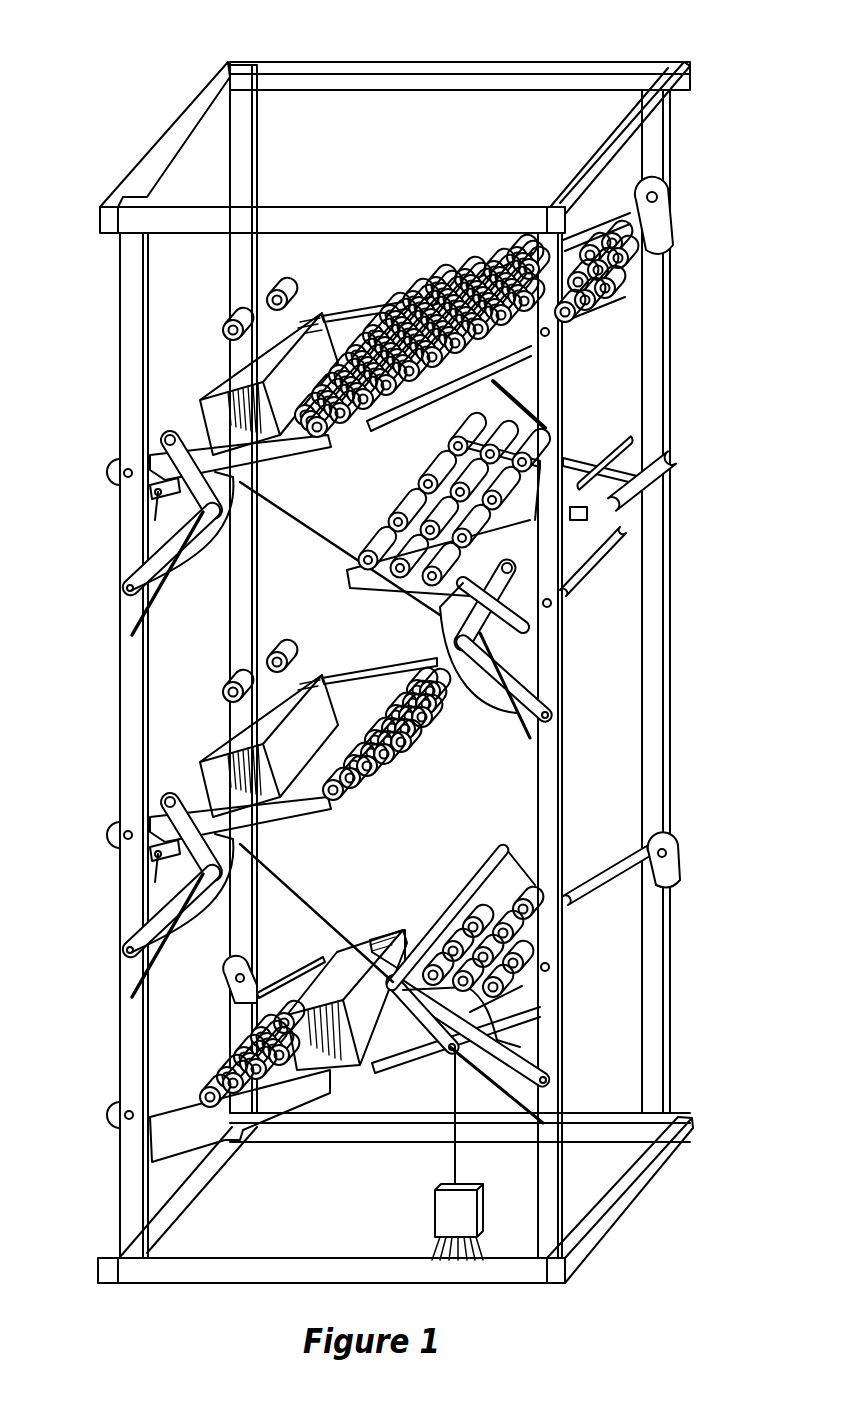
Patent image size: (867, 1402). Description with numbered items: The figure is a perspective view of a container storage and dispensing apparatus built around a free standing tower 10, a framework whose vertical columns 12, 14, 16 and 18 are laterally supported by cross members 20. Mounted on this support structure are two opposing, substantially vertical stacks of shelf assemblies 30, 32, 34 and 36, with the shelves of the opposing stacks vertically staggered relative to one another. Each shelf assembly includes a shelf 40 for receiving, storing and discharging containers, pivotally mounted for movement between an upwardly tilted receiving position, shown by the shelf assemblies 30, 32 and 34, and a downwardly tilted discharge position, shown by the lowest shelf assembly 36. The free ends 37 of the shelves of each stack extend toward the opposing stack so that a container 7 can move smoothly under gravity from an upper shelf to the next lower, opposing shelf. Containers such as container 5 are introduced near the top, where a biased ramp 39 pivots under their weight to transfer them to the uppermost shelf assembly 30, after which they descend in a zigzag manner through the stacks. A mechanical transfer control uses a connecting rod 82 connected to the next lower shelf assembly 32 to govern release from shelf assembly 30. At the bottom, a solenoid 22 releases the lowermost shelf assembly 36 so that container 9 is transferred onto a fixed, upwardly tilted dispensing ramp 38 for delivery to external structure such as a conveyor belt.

The free standing tower 10 is at (505, 51).
The vertical column 12 is at (668, 345).
The vertical column 14 is at (480, 405).
The vertical column 16 is at (118, 366).
The vertical column 18 is at (262, 160).
The cross member 20 is at (190, 100).
The solenoid 22 is at (434, 1196).
The shelf assembly 30 is at (345, 298).
The shelf assembly 32 is at (419, 468).
The shelf assembly 34 is at (347, 660).
The shelf assembly 36 is at (463, 862).
The free end 37 is at (462, 292).
The dispensing ramp 38 is at (305, 1118).
The biased ramp 39 is at (588, 238).
The shelf 40 is at (380, 298).
The connecting rod 82 is at (325, 518).
The first article box 5 is at (258, 366).
The container 7 is at (258, 728).
The container 9 is at (340, 993).